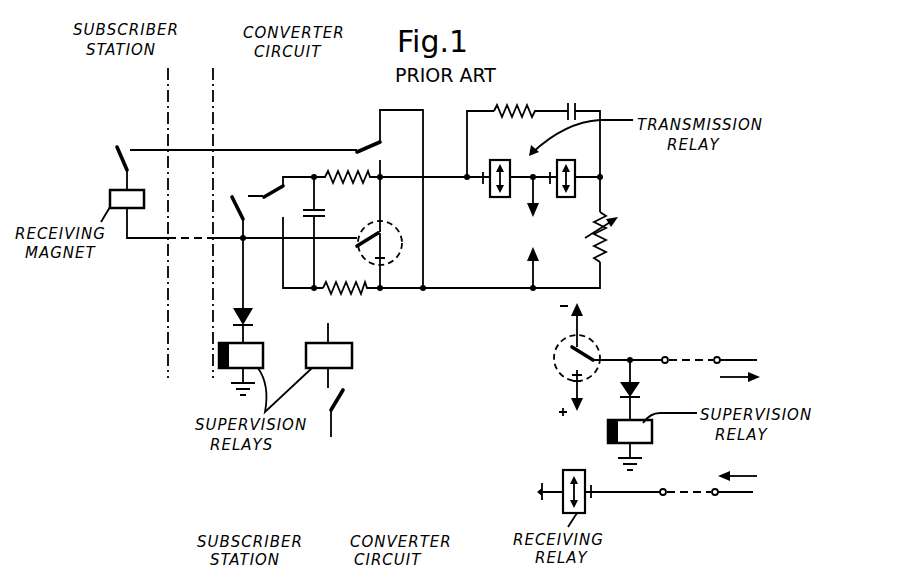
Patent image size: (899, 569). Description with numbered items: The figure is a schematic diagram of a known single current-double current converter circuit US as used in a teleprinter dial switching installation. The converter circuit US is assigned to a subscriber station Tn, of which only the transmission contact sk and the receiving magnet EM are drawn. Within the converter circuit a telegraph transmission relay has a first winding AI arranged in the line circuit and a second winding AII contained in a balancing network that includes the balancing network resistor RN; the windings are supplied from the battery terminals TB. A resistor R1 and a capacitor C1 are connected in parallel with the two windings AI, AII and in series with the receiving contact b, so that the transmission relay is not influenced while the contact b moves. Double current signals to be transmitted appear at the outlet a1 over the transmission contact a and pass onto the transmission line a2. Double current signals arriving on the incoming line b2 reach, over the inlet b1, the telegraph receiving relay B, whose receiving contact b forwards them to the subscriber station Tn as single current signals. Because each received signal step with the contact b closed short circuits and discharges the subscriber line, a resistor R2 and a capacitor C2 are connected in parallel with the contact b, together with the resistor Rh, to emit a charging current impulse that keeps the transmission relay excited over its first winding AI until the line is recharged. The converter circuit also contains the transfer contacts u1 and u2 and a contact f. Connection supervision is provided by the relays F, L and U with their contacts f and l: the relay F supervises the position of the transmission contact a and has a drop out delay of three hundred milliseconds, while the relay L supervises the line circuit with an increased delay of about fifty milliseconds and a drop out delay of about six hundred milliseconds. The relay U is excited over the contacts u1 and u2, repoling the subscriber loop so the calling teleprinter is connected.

The subscriber station Tn is at (139, 223).
The converter circuit US is at (258, 223).
The transmission contact sk is at (223, 166).
The receiving magnet EM is at (217, 214).
The transfer contact u1 is at (384, 200).
The transfer contact u2 is at (281, 185).
The contact f is at (235, 252).
The capacitor C2 is at (308, 232).
The resistor R2 is at (347, 187).
The resistor Rh is at (441, 255).
The receiving contact b is at (379, 256).
The resistor R1 is at (516, 132).
The capacitor C1 is at (585, 146).
The first winding AI is at (496, 167).
The second winding AII is at (563, 167).
The battery terminals TB is at (551, 232).
The balancing network resistor RN is at (608, 237).
The transmission contact a is at (577, 359).
The outlet a1 is at (634, 347).
The transmission line a2 is at (713, 347).
The connection supervision relay F is at (637, 415).
The telegraph receiving relay B is at (564, 480).
The inlet b1 is at (634, 506).
The incoming line b2 is at (710, 506).
The connection supervision relay L is at (247, 351).
The connection supervision relay U is at (337, 355).
The contact l is at (342, 413).